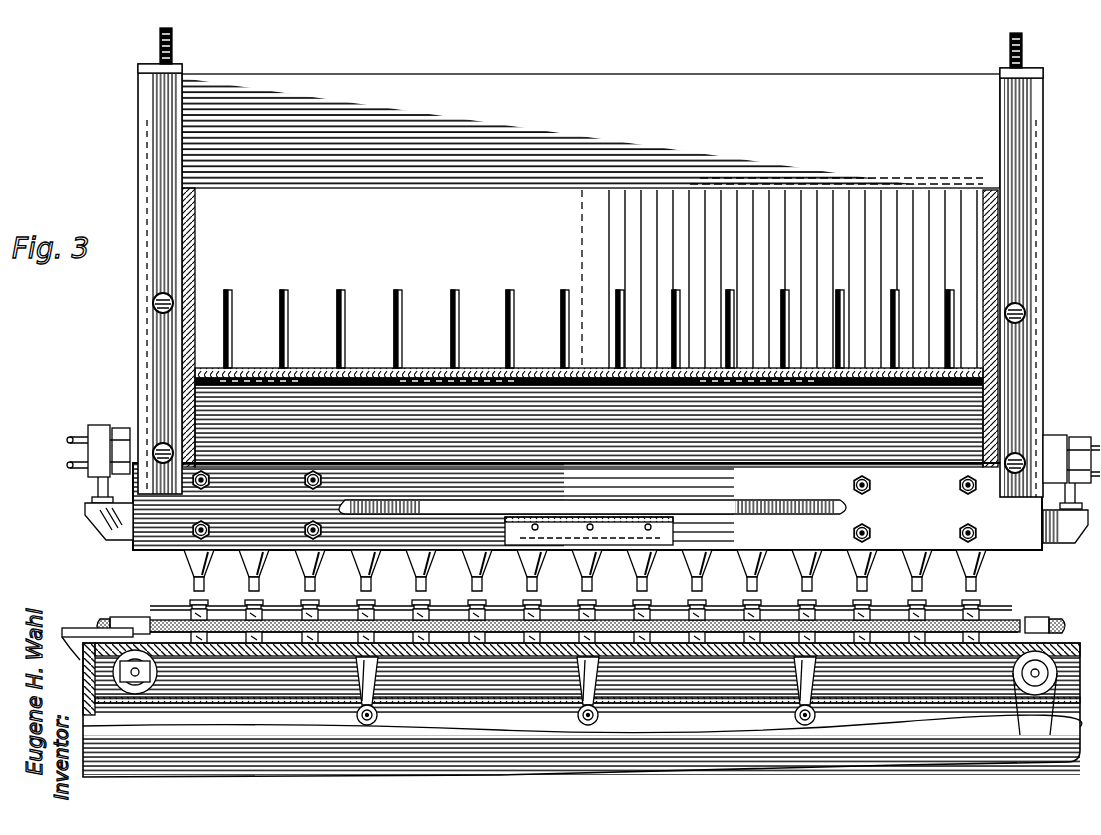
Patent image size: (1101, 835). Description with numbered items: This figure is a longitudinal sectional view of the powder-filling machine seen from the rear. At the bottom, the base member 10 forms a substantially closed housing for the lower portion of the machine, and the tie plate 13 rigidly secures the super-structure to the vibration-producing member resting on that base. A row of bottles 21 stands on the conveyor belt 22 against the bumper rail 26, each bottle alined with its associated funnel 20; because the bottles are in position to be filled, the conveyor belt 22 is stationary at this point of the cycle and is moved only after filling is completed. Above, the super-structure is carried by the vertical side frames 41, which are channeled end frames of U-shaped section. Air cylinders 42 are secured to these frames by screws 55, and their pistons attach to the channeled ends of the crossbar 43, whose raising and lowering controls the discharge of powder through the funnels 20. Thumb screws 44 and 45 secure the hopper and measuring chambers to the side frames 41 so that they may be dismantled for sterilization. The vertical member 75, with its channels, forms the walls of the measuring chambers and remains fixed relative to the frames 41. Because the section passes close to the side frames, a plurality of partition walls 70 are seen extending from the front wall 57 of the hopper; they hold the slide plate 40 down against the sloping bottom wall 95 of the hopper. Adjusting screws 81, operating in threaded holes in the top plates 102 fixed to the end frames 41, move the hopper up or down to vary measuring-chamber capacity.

The base member 10 is at (94, 619).
The tie plate 13 is at (735, 505).
The funnel 20 is at (210, 560).
The bottle 21 is at (210, 600).
The conveyor belt 22 is at (898, 712).
The bumper rail 26 is at (143, 617).
The slide plate 40 is at (422, 368).
The side frame 41 is at (146, 150).
The air cylinder 42 is at (98, 430).
The crossbar 43 is at (105, 520).
The thumb screw 44 is at (158, 444).
The thumb screw 45 is at (152, 308).
The screws 55 is at (74, 465).
The front wall of the hopper 57 is at (200, 262).
The partition walls 70 is at (284, 292).
The vertical member 75 is at (780, 88).
The adjusting screw 81 is at (172, 40).
The sloping wall 95 is at (537, 378).
The top plate 102 is at (185, 70).